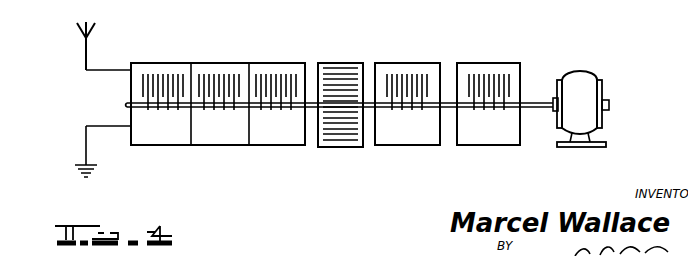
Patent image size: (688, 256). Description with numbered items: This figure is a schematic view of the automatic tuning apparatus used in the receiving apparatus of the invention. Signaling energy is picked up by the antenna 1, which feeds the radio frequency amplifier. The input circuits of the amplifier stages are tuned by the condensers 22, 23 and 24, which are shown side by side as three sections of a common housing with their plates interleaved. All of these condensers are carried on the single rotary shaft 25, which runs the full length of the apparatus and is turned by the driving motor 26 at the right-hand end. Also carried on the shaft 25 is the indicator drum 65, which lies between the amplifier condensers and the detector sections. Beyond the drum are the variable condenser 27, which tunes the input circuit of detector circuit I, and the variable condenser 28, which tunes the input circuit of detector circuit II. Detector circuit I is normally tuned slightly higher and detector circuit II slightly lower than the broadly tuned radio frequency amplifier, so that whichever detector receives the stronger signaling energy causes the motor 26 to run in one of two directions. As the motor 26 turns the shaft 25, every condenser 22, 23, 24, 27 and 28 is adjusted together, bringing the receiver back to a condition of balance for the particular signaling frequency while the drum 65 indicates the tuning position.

The antenna 1 is at (66, 55).
The condenser 22 is at (163, 69).
The condenser 23 is at (219, 137).
The condenser 24 is at (273, 69).
The rotary shaft 25 is at (313, 108).
The indicator drum 65 is at (325, 70).
The variable condenser 27 is at (408, 130).
The variable condenser 28 is at (495, 130).
The driving motor 26 is at (582, 90).